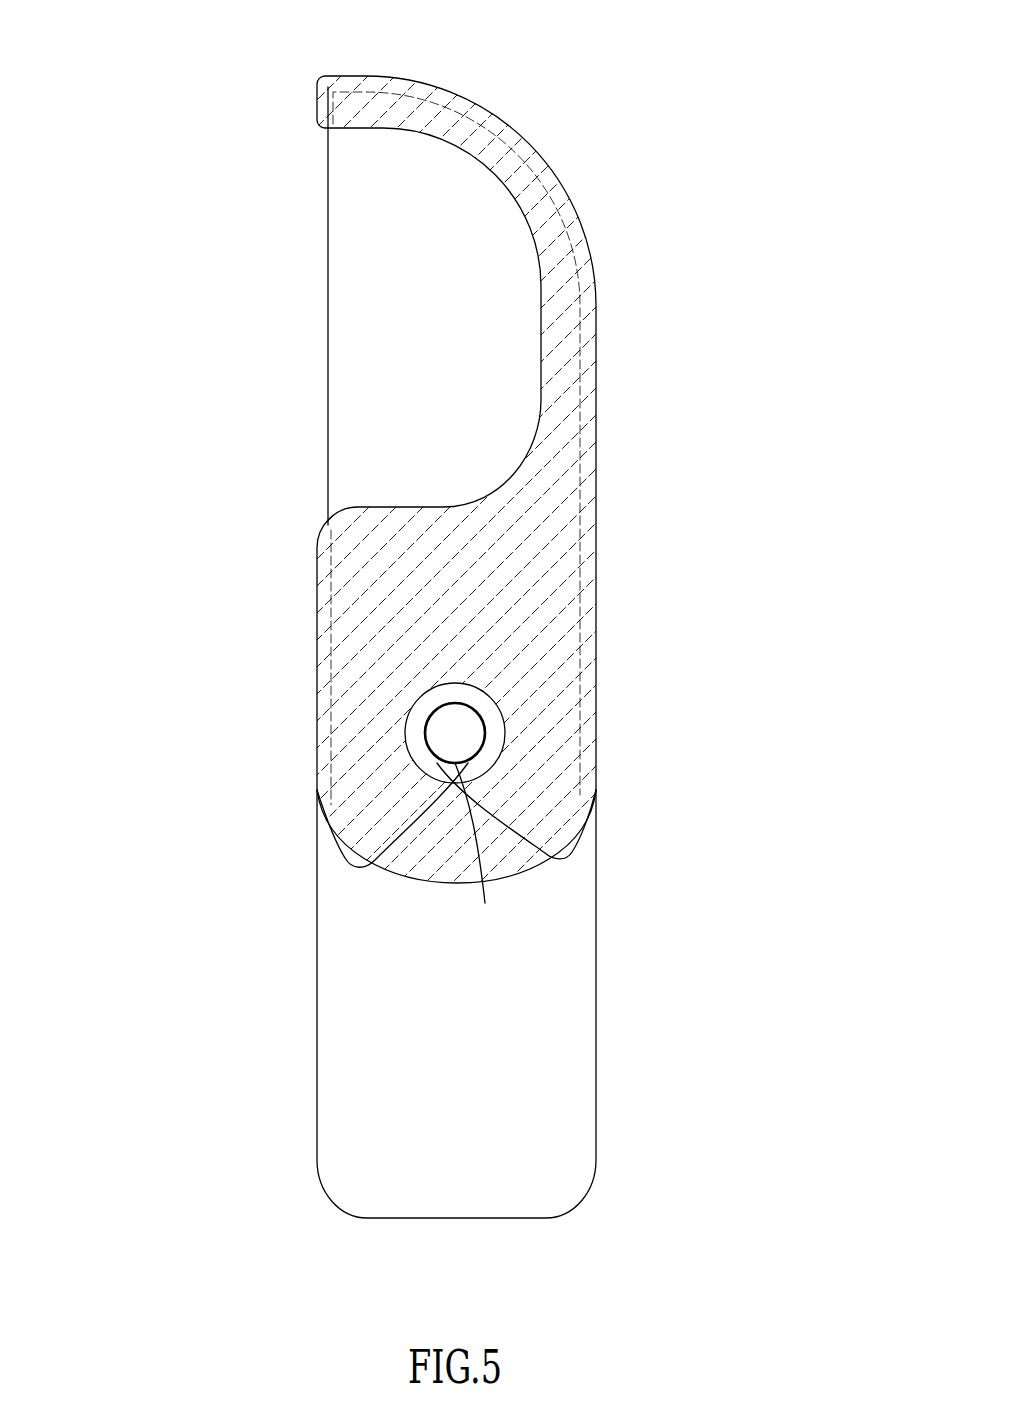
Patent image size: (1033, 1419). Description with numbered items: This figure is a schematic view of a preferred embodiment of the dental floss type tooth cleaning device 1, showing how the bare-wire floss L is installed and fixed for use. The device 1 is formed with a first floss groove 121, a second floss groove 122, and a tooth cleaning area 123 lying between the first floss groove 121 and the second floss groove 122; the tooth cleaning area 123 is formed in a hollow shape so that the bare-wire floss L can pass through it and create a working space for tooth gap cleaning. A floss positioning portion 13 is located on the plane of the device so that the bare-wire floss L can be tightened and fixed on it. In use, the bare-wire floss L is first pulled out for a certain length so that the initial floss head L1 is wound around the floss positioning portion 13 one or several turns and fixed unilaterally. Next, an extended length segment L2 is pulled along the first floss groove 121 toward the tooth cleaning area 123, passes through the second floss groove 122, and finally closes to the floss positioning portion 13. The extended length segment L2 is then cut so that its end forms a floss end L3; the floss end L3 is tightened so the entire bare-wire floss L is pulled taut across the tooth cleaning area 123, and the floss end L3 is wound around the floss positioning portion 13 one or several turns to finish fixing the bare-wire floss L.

The dental floss type tooth cleaning device 1 is at (168, 56).
The first floss groove 121 is at (323, 630).
The second floss groove 122 is at (510, 128).
The tooth cleaning area 123 is at (348, 353).
The floss positioning portion 13 is at (482, 712).
The bare-wire floss L is at (328, 233).
The initial floss head L1 is at (428, 815).
The extended length segment L2 is at (345, 861).
The floss end L3 is at (477, 853).